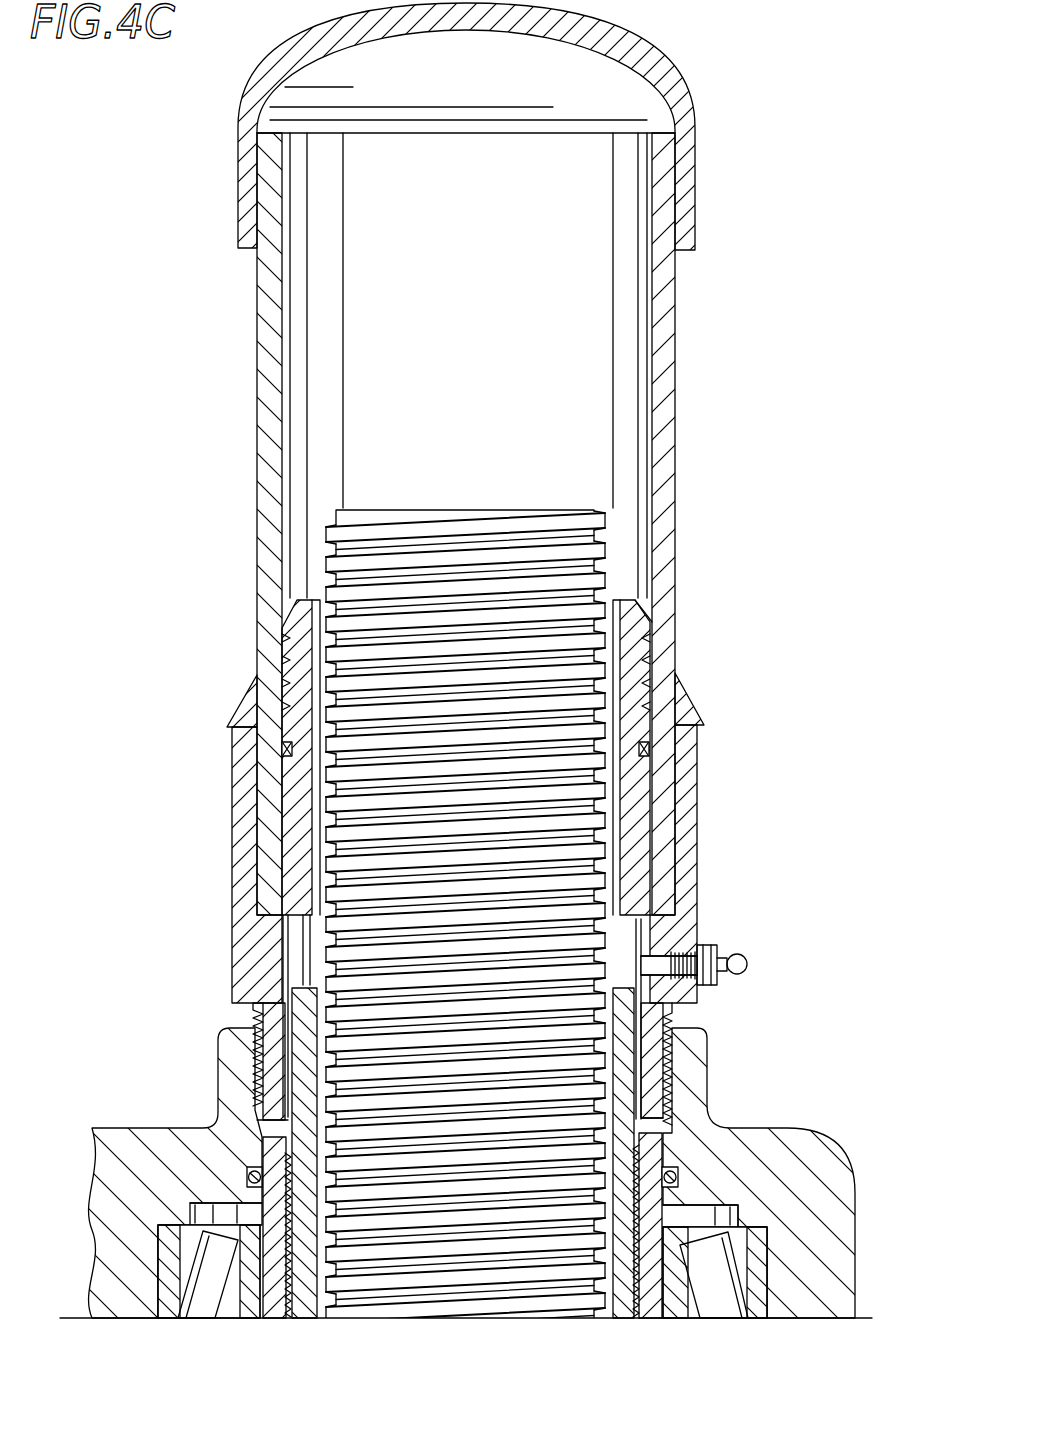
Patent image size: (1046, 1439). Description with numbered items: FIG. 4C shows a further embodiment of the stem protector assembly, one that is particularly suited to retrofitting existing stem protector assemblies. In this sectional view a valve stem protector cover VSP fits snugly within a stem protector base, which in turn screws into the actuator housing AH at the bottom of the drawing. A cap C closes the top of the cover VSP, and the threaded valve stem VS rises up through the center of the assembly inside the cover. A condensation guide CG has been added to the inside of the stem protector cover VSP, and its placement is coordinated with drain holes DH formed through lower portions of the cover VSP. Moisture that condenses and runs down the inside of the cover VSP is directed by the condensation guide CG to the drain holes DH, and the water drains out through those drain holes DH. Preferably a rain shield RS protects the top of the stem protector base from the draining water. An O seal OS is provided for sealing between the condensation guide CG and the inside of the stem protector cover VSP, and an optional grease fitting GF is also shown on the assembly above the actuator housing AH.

The cap C is at (693, 193).
The valve stem protector cover VSP is at (675, 340).
The valve stem VS is at (522, 508).
The condensation guide CG is at (637, 610).
The drain holes DH is at (670, 637).
The rain shield RS is at (690, 710).
The O seal OS is at (650, 752).
The grease fitting GF is at (738, 953).
The actuator housing AH is at (707, 1083).